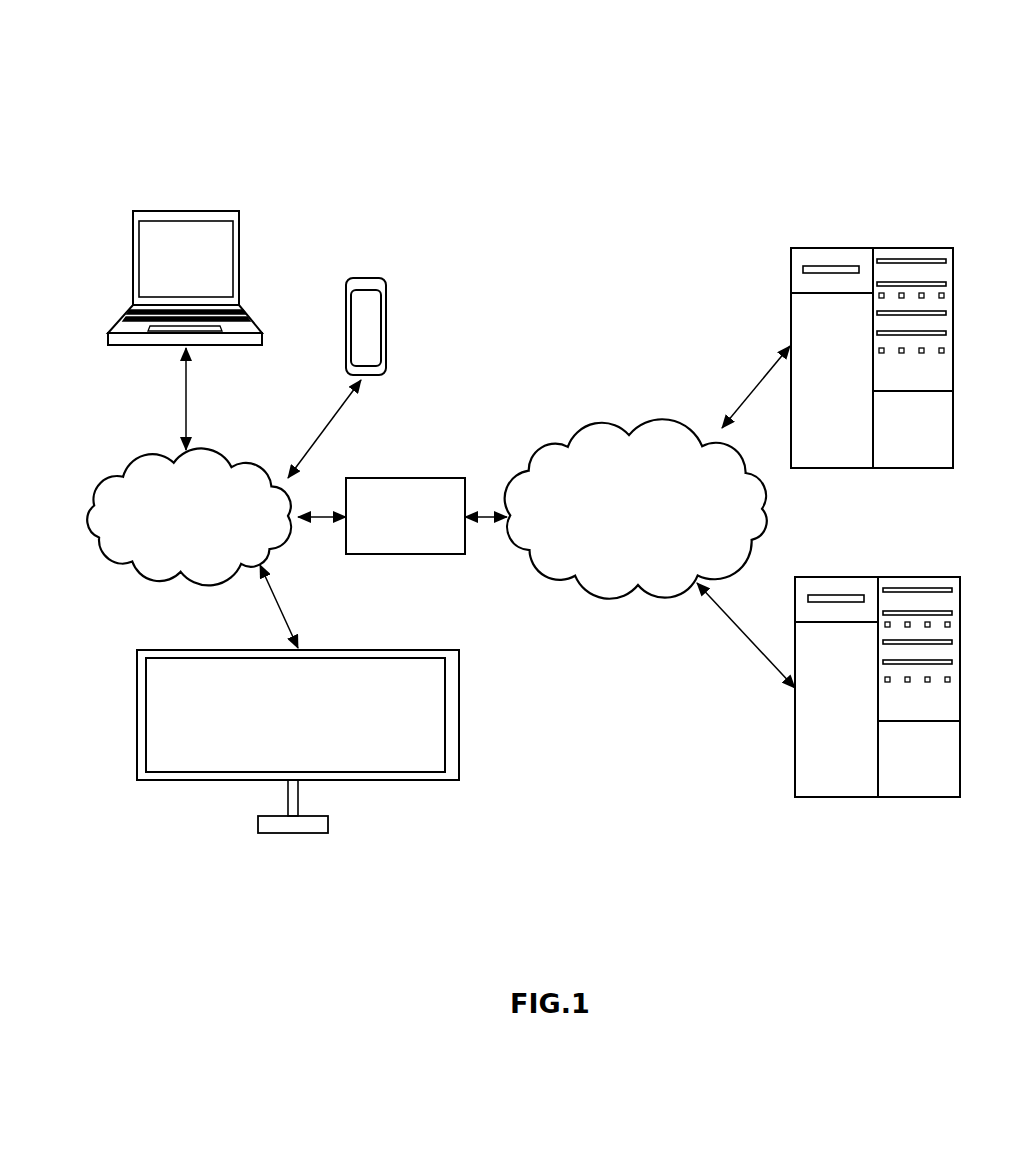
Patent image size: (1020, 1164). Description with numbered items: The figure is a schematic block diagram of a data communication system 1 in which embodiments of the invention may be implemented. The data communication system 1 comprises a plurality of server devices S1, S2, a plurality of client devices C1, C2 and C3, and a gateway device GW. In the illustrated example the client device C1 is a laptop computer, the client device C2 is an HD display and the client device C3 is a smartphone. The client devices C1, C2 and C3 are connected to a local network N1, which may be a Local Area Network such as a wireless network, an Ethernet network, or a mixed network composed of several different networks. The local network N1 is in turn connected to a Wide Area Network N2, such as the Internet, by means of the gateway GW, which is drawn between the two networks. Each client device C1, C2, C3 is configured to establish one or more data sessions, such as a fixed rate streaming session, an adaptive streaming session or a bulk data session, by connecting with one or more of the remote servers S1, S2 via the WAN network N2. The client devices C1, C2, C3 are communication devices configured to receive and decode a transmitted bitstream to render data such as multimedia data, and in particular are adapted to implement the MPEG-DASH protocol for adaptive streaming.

The data communication system 1 is at (228, 80).
The client device C1 is at (240, 229).
The client device C2 is at (460, 732).
The client device C3 is at (386, 299).
The local network N1 is at (128, 473).
The WAN network N2 is at (608, 434).
The gateway device GW is at (395, 480).
The server device S1 is at (877, 248).
The server device S2 is at (882, 577).